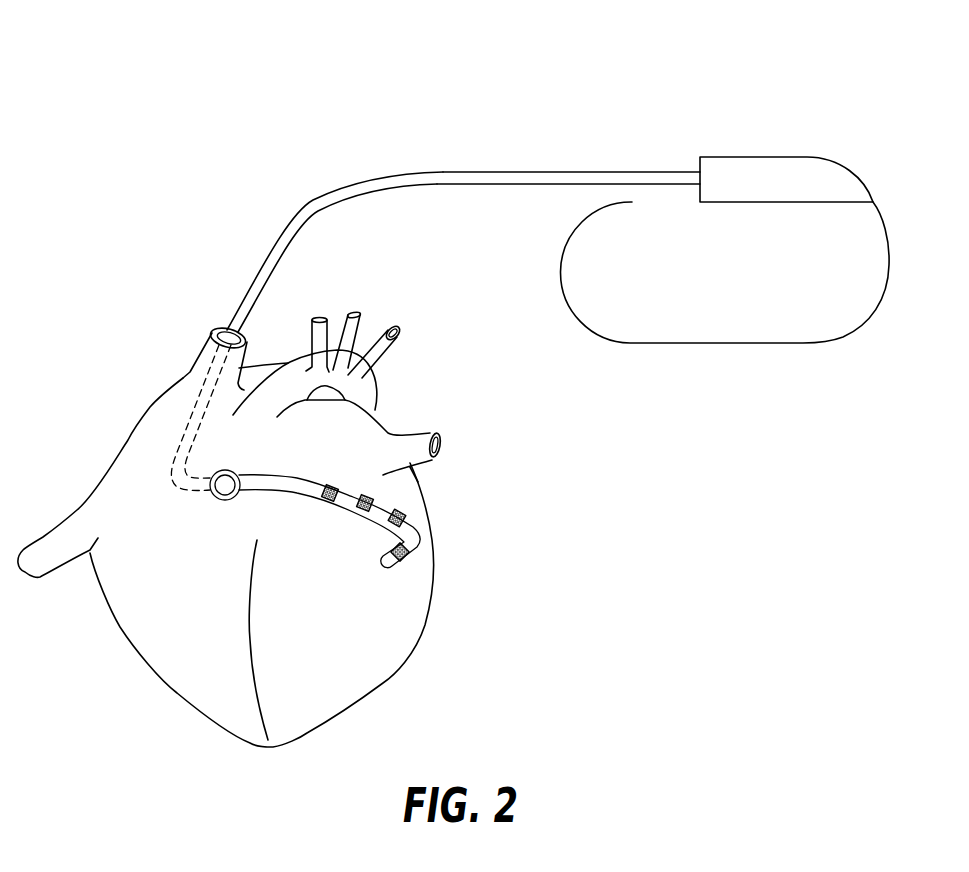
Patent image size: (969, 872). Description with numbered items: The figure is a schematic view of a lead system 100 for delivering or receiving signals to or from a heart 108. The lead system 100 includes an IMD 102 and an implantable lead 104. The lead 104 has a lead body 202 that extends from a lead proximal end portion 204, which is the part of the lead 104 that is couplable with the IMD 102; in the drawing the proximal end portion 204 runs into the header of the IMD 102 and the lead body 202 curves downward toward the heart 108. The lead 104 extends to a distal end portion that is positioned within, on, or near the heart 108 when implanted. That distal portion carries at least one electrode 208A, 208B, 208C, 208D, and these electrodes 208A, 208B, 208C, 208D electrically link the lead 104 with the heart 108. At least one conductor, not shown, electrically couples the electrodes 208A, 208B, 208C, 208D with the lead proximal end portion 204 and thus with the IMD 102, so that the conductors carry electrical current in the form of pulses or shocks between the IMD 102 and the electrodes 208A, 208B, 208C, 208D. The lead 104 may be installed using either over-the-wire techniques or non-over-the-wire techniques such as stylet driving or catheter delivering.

The lead system 100 is at (118, 43).
The IMD 102 is at (843, 112).
The implantable lead 104 is at (250, 180).
The heart 108 is at (138, 653).
The lead body 202 is at (372, 173).
The lead proximal end portion 204 is at (526, 170).
The electrode 208A is at (328, 500).
The electrode 208B is at (360, 510).
The electrode 208C is at (405, 512).
The electrode 208D is at (410, 560).